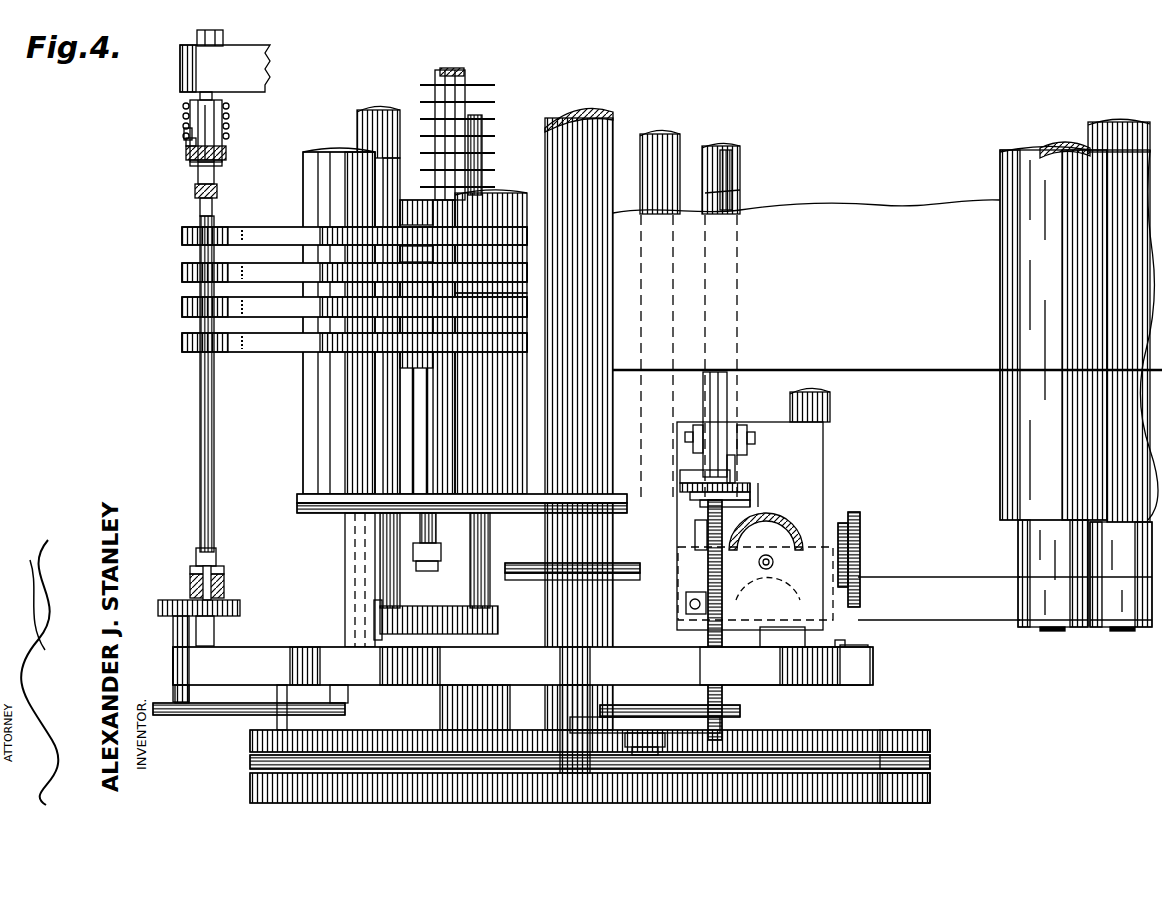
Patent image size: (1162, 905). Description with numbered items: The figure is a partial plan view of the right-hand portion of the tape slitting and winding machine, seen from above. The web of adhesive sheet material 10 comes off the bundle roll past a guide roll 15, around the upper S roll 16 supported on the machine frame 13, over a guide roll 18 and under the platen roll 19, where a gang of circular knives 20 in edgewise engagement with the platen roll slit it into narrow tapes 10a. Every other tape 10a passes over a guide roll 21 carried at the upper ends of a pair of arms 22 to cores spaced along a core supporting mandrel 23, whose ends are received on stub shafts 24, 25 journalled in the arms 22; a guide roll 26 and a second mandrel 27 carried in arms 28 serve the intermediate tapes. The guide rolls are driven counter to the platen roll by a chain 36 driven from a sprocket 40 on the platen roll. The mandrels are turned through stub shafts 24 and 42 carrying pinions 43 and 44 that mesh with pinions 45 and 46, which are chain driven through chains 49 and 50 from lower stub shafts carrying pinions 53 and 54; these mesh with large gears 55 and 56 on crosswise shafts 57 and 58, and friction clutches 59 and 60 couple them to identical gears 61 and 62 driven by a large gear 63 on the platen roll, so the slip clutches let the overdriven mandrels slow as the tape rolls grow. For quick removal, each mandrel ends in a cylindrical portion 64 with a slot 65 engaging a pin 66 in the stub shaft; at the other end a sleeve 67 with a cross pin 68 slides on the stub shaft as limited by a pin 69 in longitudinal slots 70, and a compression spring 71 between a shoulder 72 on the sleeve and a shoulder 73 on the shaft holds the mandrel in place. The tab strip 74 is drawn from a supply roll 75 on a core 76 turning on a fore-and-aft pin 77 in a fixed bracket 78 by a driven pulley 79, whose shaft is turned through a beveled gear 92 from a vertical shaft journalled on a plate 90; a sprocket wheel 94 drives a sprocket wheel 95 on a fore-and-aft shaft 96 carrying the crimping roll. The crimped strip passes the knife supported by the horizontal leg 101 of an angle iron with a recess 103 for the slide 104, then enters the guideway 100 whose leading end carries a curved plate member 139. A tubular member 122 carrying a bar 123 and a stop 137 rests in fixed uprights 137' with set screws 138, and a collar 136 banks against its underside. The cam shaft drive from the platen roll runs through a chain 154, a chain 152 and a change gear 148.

The adhesive sheet material web 10 is at (966, 360).
The tapes of narrow width 10a is at (258, 262).
The machine frame 13 is at (996, 577).
The guide roll 15 is at (1090, 132).
The upper S roll 16 is at (1000, 173).
The guide roll 18 is at (678, 140).
The platen roll 19 is at (613, 125).
The circular knives 20 is at (450, 98).
The guide roll 21 is at (303, 392).
The arms 22 is at (242, 60).
The core supporting mandrel 23 is at (214, 410).
The stub shaft 24 is at (224, 592).
The stub shaft 25 is at (183, 108).
The guide roll 26 is at (505, 437).
The core supporting mandrel 27 is at (430, 536).
The arms 28 is at (523, 666).
The chain 36 is at (462, 520).
The sprocket 40 is at (555, 568).
The stub shaft 42 is at (392, 600).
The pinion 43 is at (240, 608).
The pinion 44 is at (378, 616).
The pinion 45 is at (173, 634).
The pinion 46 is at (446, 618).
The chain 49 is at (230, 716).
The chain 50 is at (474, 690).
The pinion 53 is at (282, 730).
The pinion 54 is at (690, 738).
The large gear 55 is at (364, 736).
The large gear 56 is at (930, 740).
The shaft 57 is at (357, 124).
The shaft 58 is at (830, 400).
The friction clutch 59 is at (250, 762).
The friction clutch 60 is at (930, 762).
The gear 61 is at (250, 792).
The gear 62 is at (930, 782).
The large gear 63 is at (556, 775).
The cylindrical portion 64 is at (216, 560).
The slot 65 is at (190, 590).
The pin 66 is at (192, 570).
The sleeve 67 is at (226, 150).
The cross pin 68 is at (214, 163).
The pin 69 is at (230, 114).
The longitudinal slots 70 is at (184, 133).
The compression spring 71 is at (230, 130).
The shoulder 72 is at (188, 142).
The shoulder 73 is at (202, 100).
The tab strip 74 is at (745, 505).
The supply roll 75 is at (712, 660).
The core 76 is at (706, 632).
The fore-and-aft pin 77 is at (696, 608).
The fixed bracket 78 is at (782, 637).
The driven pulley 79 is at (706, 552).
The plate 90 is at (845, 642).
The beveled gear 92 is at (790, 522).
The sprocket wheel 94 is at (860, 586).
The sprocket wheel 95 is at (860, 516).
The fore-and-aft shaft 96 is at (735, 555).
The guideway 100 is at (752, 466).
The horizontal leg 101 is at (745, 427).
The recess 103 is at (498, 192).
The slide 104 is at (758, 500).
The tubular member 122 is at (742, 190).
The bar 123 is at (710, 148).
The collar 136 is at (735, 165).
The stop 137 is at (775, 458).
The fixed uprights 137' is at (763, 411).
The set screws 138 is at (693, 440).
The plate member 139 is at (760, 490).
The change gear 148 is at (614, 736).
The chain 152 is at (652, 706).
The chain 154 is at (572, 594).